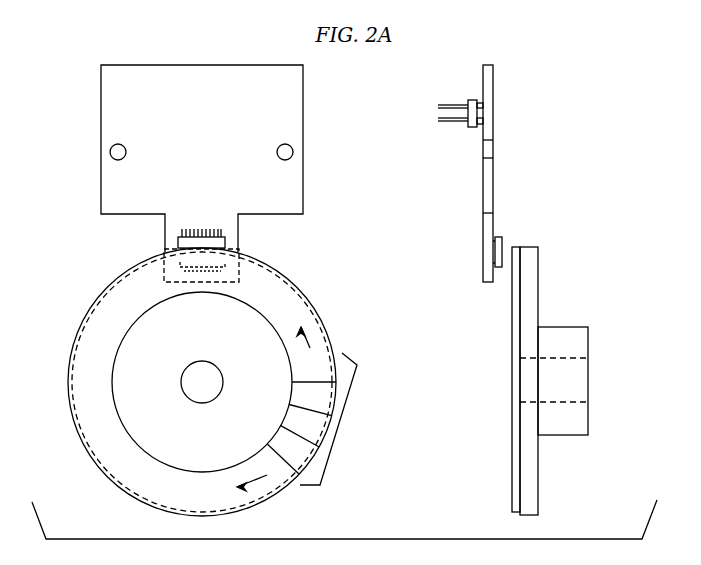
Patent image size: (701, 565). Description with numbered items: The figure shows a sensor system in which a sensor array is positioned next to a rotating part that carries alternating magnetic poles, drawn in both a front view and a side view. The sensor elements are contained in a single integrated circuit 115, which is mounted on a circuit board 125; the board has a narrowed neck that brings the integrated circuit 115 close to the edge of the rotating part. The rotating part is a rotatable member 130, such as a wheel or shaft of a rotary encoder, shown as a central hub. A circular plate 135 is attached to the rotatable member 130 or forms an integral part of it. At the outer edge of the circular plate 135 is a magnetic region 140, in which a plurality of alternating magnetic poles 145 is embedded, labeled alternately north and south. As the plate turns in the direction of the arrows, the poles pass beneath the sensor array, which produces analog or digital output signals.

The integrated circuit 115 is at (177, 252).
The circuit board 125 is at (218, 136).
The rotatable member 130 is at (222, 380).
The circular plate 135 is at (540, 502).
The magnetic region 140 is at (118, 455).
The alternating magnetic poles 145 is at (335, 425).